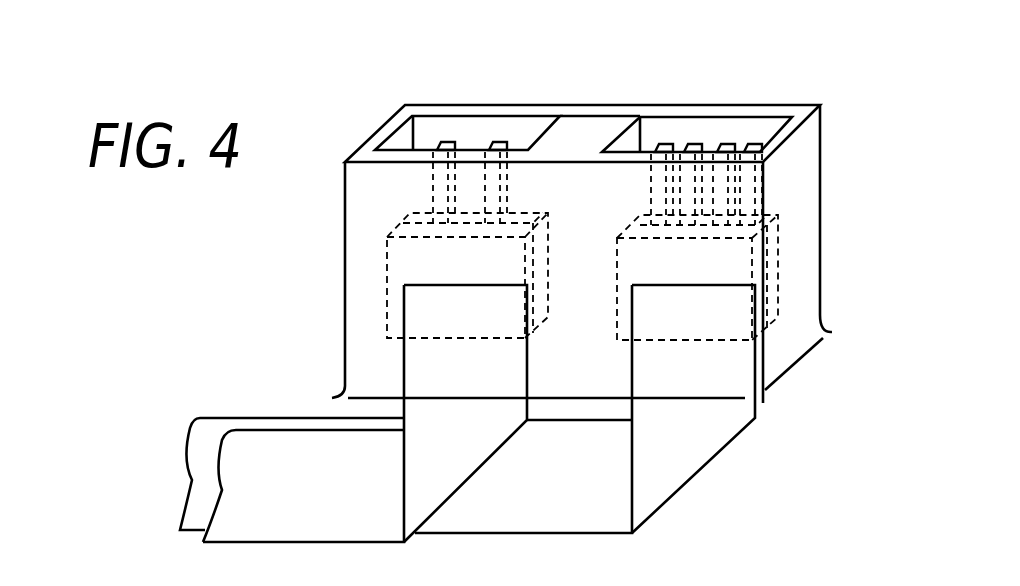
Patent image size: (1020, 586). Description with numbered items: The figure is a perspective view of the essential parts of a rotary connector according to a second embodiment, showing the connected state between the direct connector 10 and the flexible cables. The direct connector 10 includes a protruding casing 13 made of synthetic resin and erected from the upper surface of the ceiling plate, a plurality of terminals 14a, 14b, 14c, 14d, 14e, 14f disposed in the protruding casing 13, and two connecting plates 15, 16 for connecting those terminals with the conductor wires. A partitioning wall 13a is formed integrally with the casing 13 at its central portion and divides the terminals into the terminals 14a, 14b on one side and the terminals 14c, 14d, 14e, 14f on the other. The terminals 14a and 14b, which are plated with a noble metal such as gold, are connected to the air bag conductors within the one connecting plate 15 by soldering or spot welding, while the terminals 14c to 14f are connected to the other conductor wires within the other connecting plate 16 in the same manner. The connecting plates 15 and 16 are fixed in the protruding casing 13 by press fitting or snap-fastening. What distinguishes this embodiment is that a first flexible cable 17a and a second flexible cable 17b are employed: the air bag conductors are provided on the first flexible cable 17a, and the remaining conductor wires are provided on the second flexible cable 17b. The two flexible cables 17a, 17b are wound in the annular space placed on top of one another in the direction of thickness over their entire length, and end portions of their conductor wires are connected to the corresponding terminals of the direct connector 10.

The direct connector 10 is at (826, 158).
The protruding casing 13 is at (380, 130).
The partitioning wall 13a is at (568, 140).
The terminal 14a is at (446, 140).
The terminal 14b is at (498, 140).
The terminal 14c is at (663, 142).
The terminal 14d is at (693, 142).
The terminal 14e is at (727, 142).
The terminal 14f is at (752, 145).
The connecting plate 15 is at (387, 273).
The connecting plate 16 is at (778, 288).
The first flexible cable 17a is at (287, 440).
The second flexible cable 17b is at (207, 425).